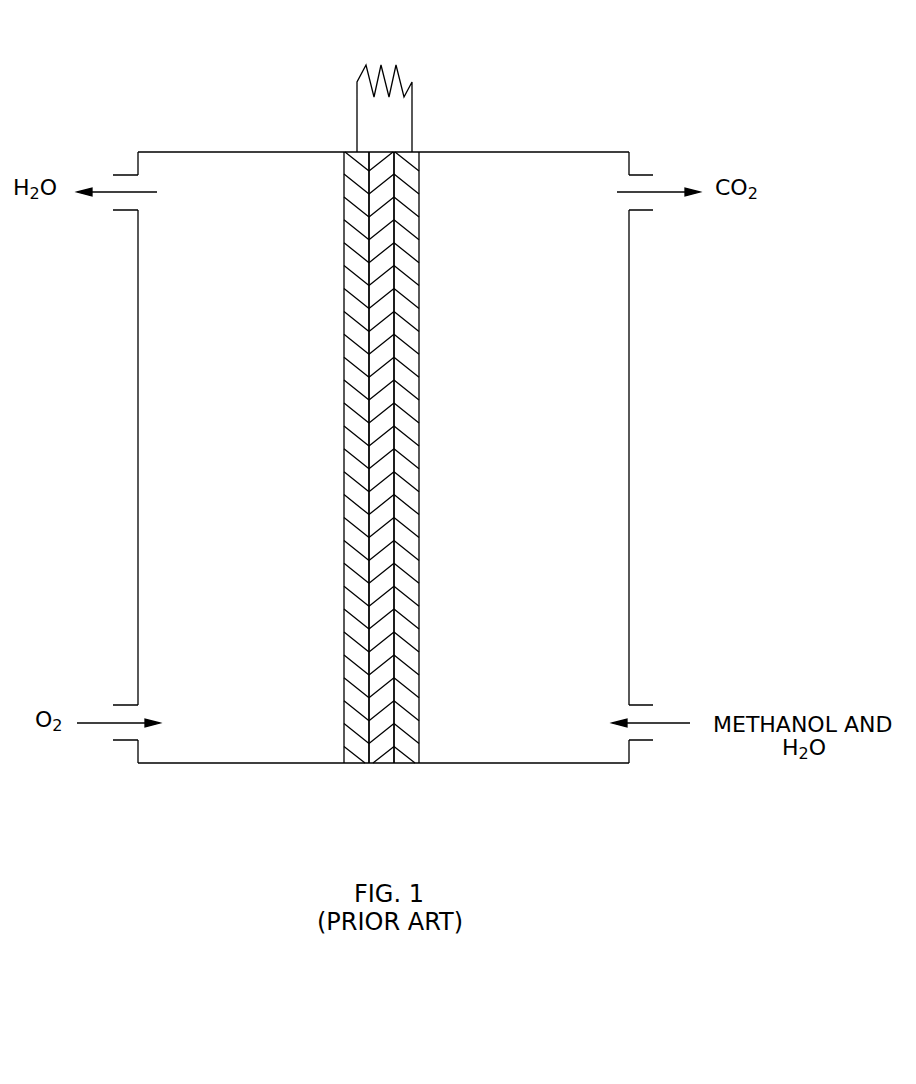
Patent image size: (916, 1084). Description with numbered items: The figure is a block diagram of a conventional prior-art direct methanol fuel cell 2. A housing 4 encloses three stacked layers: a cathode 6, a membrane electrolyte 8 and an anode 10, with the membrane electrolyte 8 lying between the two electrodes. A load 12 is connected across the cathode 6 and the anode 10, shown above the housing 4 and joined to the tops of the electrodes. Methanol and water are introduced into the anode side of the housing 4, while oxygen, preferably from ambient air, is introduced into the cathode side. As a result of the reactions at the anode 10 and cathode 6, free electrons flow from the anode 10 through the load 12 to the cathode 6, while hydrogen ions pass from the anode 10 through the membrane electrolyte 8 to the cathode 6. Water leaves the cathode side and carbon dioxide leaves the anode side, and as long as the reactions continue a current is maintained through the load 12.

The direct methanol fuel cell 2 is at (504, 442).
The housing 4 is at (212, 764).
The cathode 6 is at (353, 765).
The membrane electrolyte 8 is at (380, 765).
The anode 10 is at (407, 765).
The load 12 is at (412, 88).